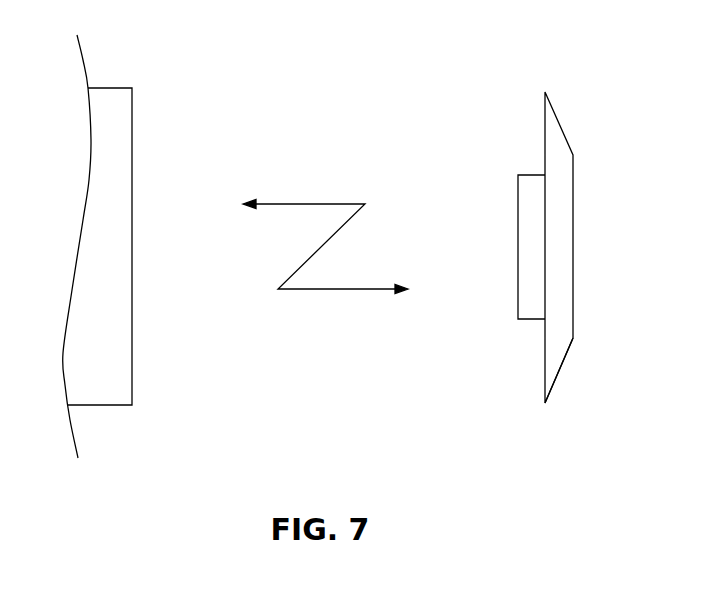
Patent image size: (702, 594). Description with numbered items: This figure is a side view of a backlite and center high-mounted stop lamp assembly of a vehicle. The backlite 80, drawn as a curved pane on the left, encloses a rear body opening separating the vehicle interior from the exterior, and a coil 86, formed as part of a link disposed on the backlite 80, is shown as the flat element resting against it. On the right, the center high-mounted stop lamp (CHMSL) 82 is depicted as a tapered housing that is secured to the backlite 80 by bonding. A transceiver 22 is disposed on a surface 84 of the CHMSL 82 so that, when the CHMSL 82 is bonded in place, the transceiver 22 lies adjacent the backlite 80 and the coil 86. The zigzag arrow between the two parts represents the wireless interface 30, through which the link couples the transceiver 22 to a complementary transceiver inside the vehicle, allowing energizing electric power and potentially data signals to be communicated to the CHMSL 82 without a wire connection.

The backlite 80 is at (83, 63).
The coil 86 is at (132, 389).
The wireless interface 30 is at (345, 289).
The center high-mounted stop lamp (CHMSL) 82 is at (573, 155).
The transceiver 22 is at (517, 210).
The surface 84 is at (545, 357).